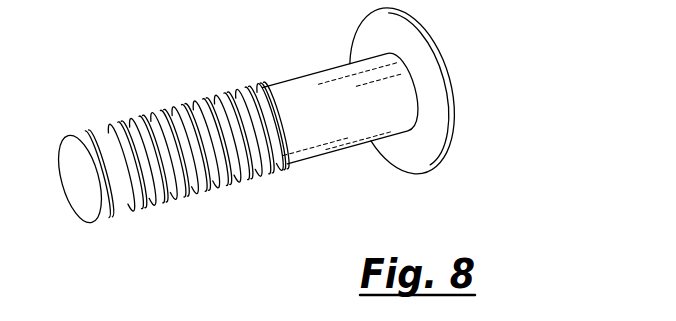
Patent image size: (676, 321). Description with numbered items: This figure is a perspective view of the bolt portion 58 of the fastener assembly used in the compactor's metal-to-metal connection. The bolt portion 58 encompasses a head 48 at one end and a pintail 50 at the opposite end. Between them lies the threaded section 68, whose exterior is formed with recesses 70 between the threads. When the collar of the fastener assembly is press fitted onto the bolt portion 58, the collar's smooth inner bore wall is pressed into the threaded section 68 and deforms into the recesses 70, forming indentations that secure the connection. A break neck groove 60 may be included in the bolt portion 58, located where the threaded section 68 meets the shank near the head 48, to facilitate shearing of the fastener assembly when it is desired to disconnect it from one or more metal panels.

The head 48 is at (450, 78).
The pintail 50 is at (87, 131).
The bolt portion 58 is at (334, 126).
The break neck groove 60 is at (256, 88).
The threaded section 68 is at (187, 199).
The recesses 70 is at (199, 101).